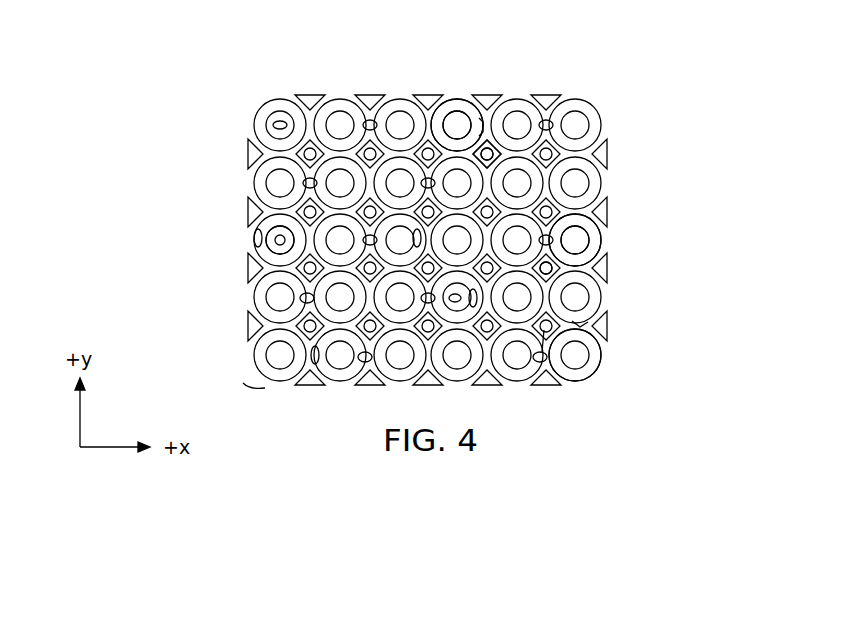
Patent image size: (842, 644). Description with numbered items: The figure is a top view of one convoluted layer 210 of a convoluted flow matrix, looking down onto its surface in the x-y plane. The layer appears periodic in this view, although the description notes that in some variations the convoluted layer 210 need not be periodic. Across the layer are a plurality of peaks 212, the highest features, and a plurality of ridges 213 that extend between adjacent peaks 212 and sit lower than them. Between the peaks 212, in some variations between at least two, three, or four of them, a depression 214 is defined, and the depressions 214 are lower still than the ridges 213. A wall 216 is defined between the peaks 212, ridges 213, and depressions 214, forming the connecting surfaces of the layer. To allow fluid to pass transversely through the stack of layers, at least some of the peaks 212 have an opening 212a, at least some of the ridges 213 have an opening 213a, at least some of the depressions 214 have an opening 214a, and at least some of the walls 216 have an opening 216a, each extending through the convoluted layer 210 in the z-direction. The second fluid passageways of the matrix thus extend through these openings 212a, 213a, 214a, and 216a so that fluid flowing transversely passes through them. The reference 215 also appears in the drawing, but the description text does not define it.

The convoluted layer 210 is at (638, 95).
The peak 212 is at (460, 122).
The opening 212a is at (280, 238).
The ridge 213 is at (307, 112).
The opening 213a is at (370, 113).
The depression 214 is at (478, 128).
The opening 214a is at (490, 150).
The cell wall 215 is at (558, 376).
The wall 216 is at (485, 150).
The opening 216a is at (277, 239).